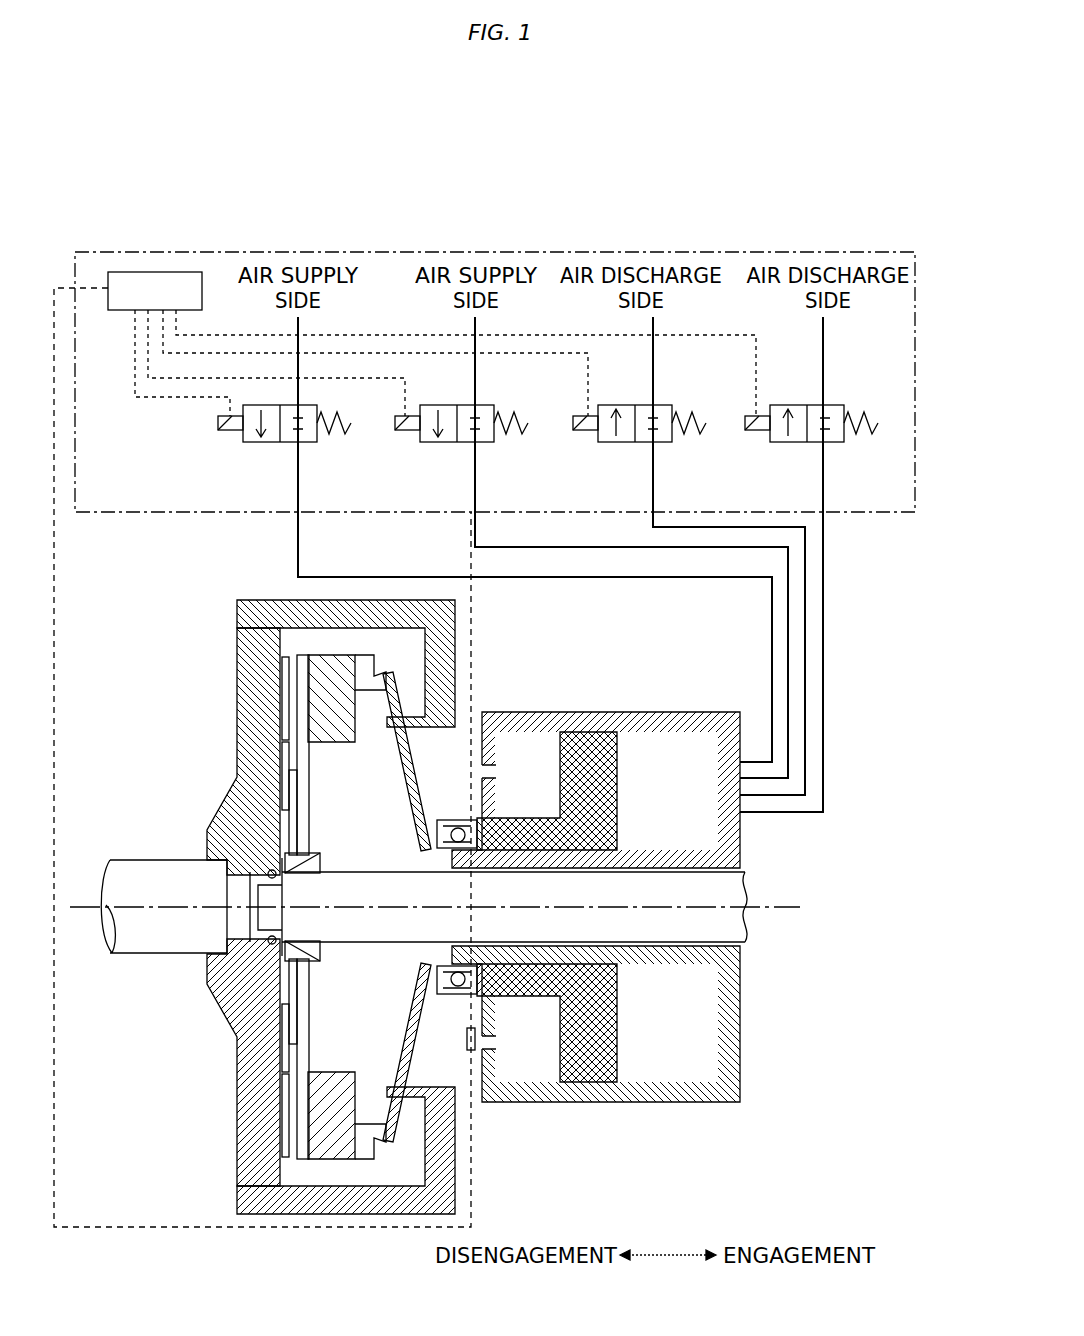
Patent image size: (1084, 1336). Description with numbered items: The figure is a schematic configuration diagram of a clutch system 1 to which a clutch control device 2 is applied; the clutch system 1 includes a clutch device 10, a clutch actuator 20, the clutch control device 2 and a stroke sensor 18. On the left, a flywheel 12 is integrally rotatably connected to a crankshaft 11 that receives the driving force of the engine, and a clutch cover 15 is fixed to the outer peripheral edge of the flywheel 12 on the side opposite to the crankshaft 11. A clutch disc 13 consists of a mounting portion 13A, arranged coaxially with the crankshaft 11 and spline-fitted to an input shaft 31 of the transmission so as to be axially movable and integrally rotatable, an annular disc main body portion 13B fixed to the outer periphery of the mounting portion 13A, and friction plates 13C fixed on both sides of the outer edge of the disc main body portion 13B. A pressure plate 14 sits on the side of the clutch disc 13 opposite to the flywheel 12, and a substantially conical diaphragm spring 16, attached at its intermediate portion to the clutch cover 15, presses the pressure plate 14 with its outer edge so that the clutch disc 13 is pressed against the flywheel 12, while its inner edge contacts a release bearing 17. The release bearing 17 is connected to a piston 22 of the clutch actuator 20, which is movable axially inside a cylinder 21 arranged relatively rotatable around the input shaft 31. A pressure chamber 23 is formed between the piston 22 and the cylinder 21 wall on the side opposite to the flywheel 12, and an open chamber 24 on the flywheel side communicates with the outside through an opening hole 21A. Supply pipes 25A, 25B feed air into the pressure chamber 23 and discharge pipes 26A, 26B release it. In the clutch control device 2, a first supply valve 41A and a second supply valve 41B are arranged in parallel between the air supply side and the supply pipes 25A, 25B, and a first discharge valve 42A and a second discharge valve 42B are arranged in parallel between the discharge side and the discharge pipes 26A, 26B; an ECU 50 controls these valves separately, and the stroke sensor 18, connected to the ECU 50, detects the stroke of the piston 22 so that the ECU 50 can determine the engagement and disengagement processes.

The clutch system 1 is at (610, 224).
The clutch control device 2 is at (917, 288).
The clutch device 10 is at (156, 624).
The crankshaft 11 is at (160, 945).
The flywheel 12 is at (237, 686).
The clutch disc 13 is at (130, 708).
The mounting portion 13A is at (207, 832).
The disc main body portion 13B is at (237, 783).
The friction plates 13C is at (237, 717).
The pressure plate 14 is at (330, 743).
The clutch cover 15 is at (455, 640).
The diaphragm spring 16 is at (415, 798).
The release bearing 17 is at (462, 818).
The stroke sensor 18 is at (471, 1052).
The clutch actuator 20 is at (627, 867).
The cylinder 21 is at (708, 712).
The opening hole 21A is at (497, 772).
The piston 22 is at (618, 828).
The pressure chamber 23 is at (652, 797).
The open chamber 24 is at (545, 738).
The supply pipe 25A is at (296, 540).
The supply pipe 25B is at (472, 538).
The discharge pipe 26A is at (668, 527).
The discharge pipe 26B is at (826, 763).
The input shaft 31 is at (745, 912).
The first supply valve 41A is at (250, 443).
The second supply valve 41B is at (427, 443).
The first discharge valve 42A is at (605, 443).
The second discharge valve 42B is at (777, 443).
The ECU 50 is at (158, 270).